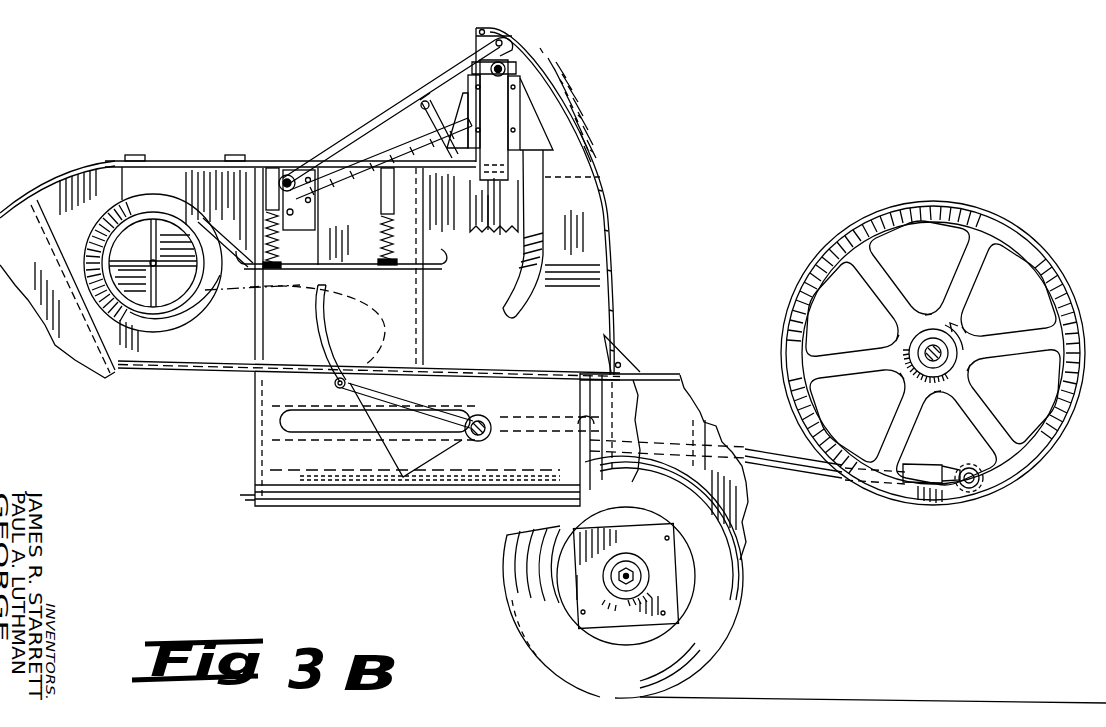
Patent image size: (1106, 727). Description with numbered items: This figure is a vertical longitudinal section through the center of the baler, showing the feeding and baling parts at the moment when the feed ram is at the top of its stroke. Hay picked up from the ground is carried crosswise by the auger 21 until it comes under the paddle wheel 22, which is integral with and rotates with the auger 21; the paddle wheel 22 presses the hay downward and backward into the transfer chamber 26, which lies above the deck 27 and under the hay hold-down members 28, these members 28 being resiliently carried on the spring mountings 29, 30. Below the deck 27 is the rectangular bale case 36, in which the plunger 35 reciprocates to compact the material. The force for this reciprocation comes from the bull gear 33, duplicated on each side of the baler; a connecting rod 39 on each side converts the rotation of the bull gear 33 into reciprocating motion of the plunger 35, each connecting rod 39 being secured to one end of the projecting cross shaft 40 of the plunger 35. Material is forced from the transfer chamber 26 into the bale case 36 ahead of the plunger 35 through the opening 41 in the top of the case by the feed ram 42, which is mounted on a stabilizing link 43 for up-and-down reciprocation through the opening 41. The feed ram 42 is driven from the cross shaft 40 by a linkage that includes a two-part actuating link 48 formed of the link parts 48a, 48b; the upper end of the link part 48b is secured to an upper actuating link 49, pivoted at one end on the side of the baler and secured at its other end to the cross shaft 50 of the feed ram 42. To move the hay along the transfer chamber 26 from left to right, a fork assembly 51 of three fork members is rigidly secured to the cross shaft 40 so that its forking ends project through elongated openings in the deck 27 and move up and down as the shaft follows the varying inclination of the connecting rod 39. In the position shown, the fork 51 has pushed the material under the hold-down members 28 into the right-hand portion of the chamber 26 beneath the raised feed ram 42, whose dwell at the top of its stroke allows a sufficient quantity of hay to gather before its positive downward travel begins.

The auger 21 is at (164, 212).
The paddle wheel 22 is at (150, 245).
The transfer chamber 26 is at (380, 336).
The deck 27 is at (218, 360).
The hay hold-down members 28 is at (346, 264).
The spring mounting 29 is at (287, 175).
The spring mounting 30 is at (380, 194).
The bull gear 33 is at (908, 492).
The plunger 35 is at (525, 470).
The bale case 36 is at (600, 395).
The connecting rod 39 is at (782, 462).
The cross shaft 40 is at (486, 426).
The opening 41 is at (470, 370).
The feed ram 42 is at (530, 132).
The stabilizing link 43 is at (406, 100).
The two-part actuating link 48 is at (398, 138).
The link part 48a is at (541, 268).
The link part 48b is at (450, 152).
The upper actuating link 49 is at (428, 98).
The cross shaft 50 is at (503, 64).
The fork assembly 51 is at (306, 341).